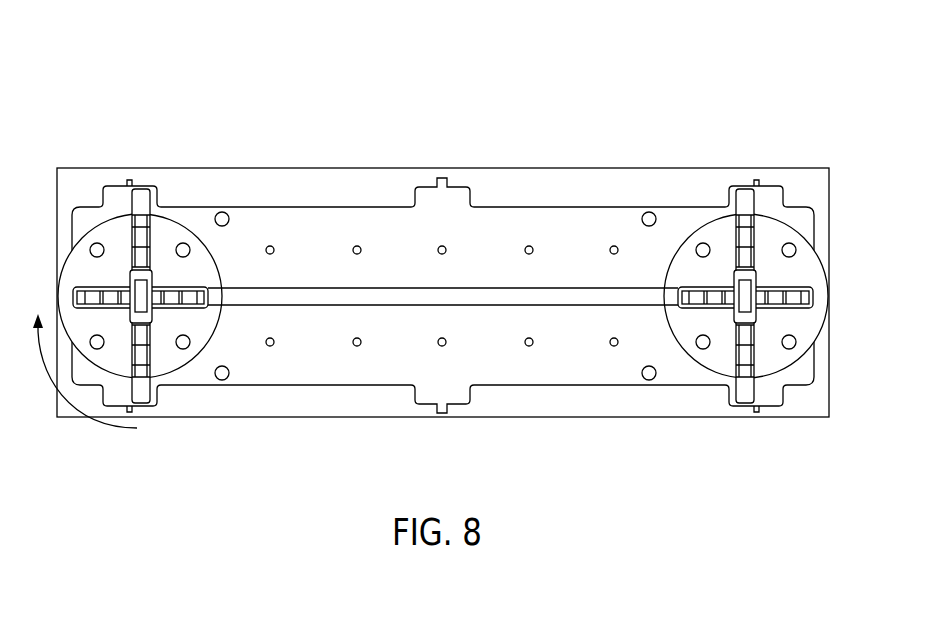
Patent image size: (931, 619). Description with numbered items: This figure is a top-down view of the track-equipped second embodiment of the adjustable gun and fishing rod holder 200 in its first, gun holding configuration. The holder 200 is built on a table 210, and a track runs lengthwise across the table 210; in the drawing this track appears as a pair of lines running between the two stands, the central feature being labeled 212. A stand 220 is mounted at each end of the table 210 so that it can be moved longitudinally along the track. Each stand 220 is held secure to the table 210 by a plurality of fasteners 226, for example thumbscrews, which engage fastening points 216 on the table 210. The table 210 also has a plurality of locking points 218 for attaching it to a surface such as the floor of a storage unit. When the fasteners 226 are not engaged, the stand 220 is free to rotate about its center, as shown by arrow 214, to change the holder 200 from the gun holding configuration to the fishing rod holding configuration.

The gun and fishing rod holder 200 is at (226, 61).
The table 210 is at (492, 258).
The rail 212 is at (316, 306).
The arrow 214 is at (120, 430).
The fastening points 216 is at (272, 244).
The locking points 218 is at (224, 212).
The stand 220 is at (230, 155).
The fasteners 226 is at (702, 243).